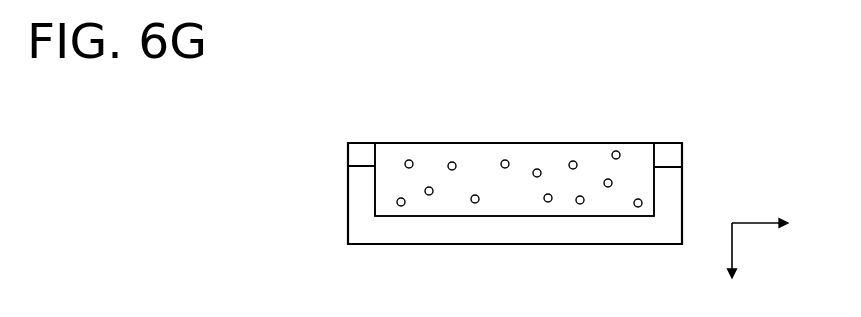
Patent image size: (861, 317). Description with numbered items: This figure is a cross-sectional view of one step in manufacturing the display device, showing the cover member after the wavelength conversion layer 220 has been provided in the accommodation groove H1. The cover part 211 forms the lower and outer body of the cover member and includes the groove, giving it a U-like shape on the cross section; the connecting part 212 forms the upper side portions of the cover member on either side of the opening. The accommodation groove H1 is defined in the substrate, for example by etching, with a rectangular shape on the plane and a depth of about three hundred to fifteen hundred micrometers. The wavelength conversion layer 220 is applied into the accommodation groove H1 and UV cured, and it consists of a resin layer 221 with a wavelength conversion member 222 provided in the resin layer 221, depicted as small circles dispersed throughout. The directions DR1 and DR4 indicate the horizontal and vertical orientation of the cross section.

The cover part 211 is at (358, 203).
The connecting part 212 is at (357, 155).
The wavelength conversion layer 220 is at (463, 80).
The resin layer 221 is at (477, 156).
The wavelength conversion member 222 is at (538, 169).
The accommodation groove H1 is at (653, 180).
The first direction DR1 is at (780, 225).
The fourth direction DR4 is at (731, 263).